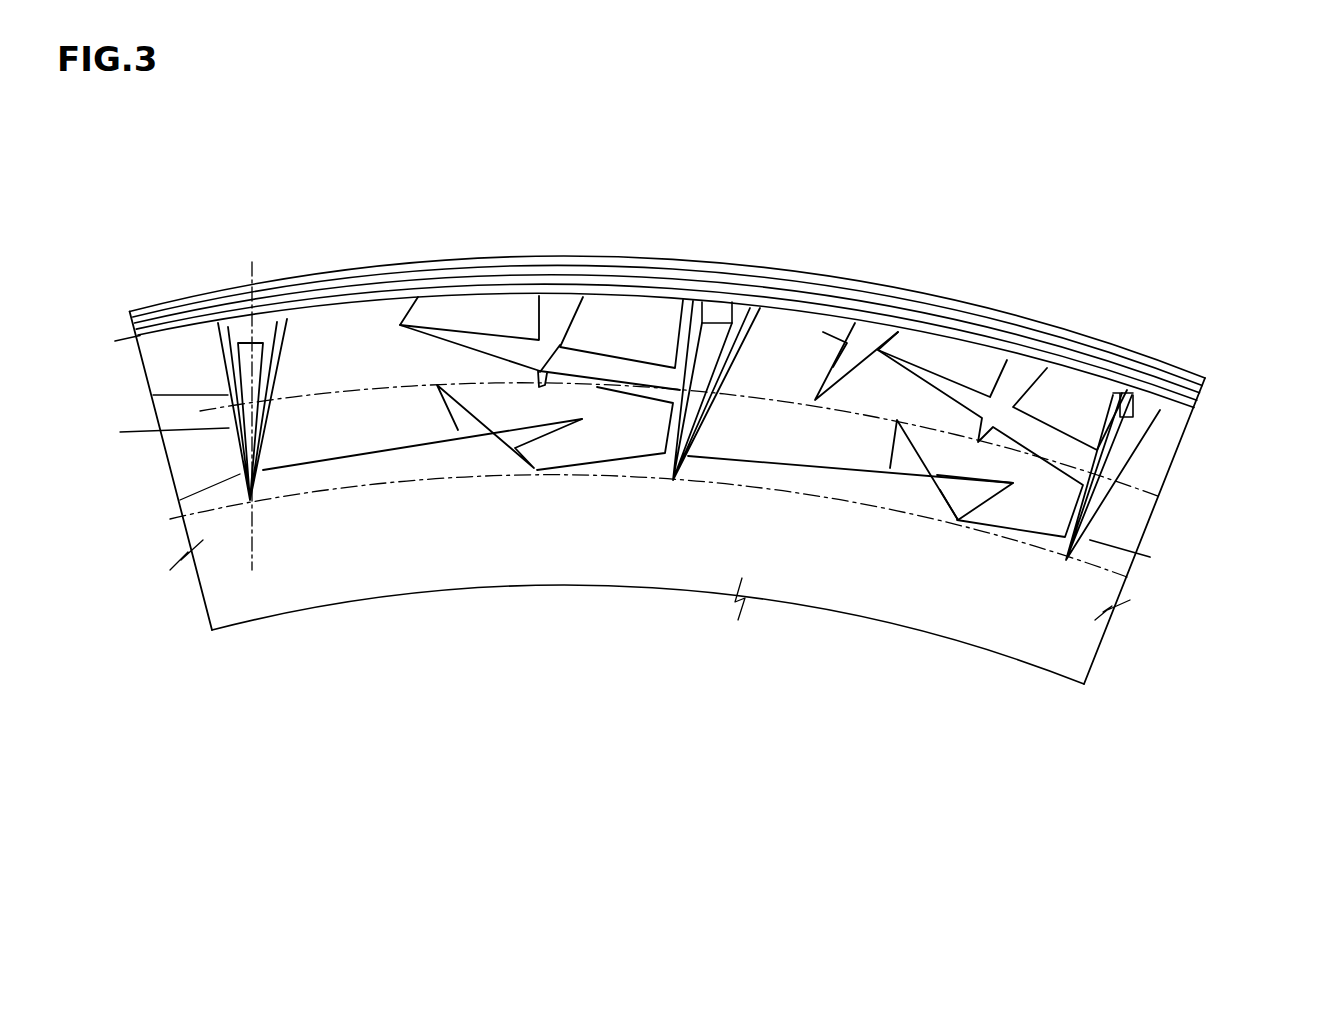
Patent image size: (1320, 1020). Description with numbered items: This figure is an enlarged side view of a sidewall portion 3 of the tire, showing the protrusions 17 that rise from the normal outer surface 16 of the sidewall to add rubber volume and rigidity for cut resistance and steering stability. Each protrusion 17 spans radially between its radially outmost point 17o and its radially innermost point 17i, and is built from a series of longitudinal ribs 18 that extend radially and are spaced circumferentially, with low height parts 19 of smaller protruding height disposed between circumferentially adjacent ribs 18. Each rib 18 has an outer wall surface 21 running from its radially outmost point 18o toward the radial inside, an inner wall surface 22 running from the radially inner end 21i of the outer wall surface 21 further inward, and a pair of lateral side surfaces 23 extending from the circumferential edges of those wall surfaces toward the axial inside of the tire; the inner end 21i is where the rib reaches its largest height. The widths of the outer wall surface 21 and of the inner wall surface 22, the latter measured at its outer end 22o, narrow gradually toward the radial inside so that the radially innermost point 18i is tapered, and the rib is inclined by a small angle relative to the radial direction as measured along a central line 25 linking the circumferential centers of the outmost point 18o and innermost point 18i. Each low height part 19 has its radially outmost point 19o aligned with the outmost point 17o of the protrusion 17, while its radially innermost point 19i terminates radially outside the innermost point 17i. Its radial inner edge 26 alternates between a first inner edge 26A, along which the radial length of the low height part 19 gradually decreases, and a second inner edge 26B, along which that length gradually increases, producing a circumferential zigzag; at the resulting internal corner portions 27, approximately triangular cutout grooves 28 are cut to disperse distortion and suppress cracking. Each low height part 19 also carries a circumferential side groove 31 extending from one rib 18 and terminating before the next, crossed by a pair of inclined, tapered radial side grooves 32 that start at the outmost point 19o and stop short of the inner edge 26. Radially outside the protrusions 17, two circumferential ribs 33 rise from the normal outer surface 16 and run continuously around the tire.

The sidewall portion 3 is at (1083, 641).
The normal outer surface 16 is at (307, 547).
The protrusion 17 is at (397, 195).
The longitudinal rib 18 is at (262, 357).
The low height part 19 is at (407, 366).
The outer wall surface 21 is at (732, 303).
The inner wall surface 22 is at (690, 385).
The lateral side surface 23 is at (1100, 405).
The central line 25 is at (250, 277).
The radial inner edge 26 is at (355, 708).
The first inner edge 26A is at (363, 490).
The second inner edge 26B is at (536, 470).
The internal corner portion 27 is at (492, 430).
The cutout groove 28 is at (458, 413).
The circumferential side groove 31 is at (977, 400).
The radial side groove 32 is at (850, 342).
The circumferential rib 33 is at (150, 307).
The radially innermost point of the protrusion 17i is at (1064, 566).
The radially outmost point of the protrusion 17o is at (1125, 415).
The radially innermost point of the rib 18i is at (248, 505).
The radially outmost point of the rib 18o is at (285, 318).
The radially innermost point of the low height part 19i is at (533, 471).
The radially outmost point of the low height part 19o is at (943, 397).
The radially inner end of the outer wall surface 21i is at (1200, 390).
The outer end of the inner wall surface 22o is at (705, 300).